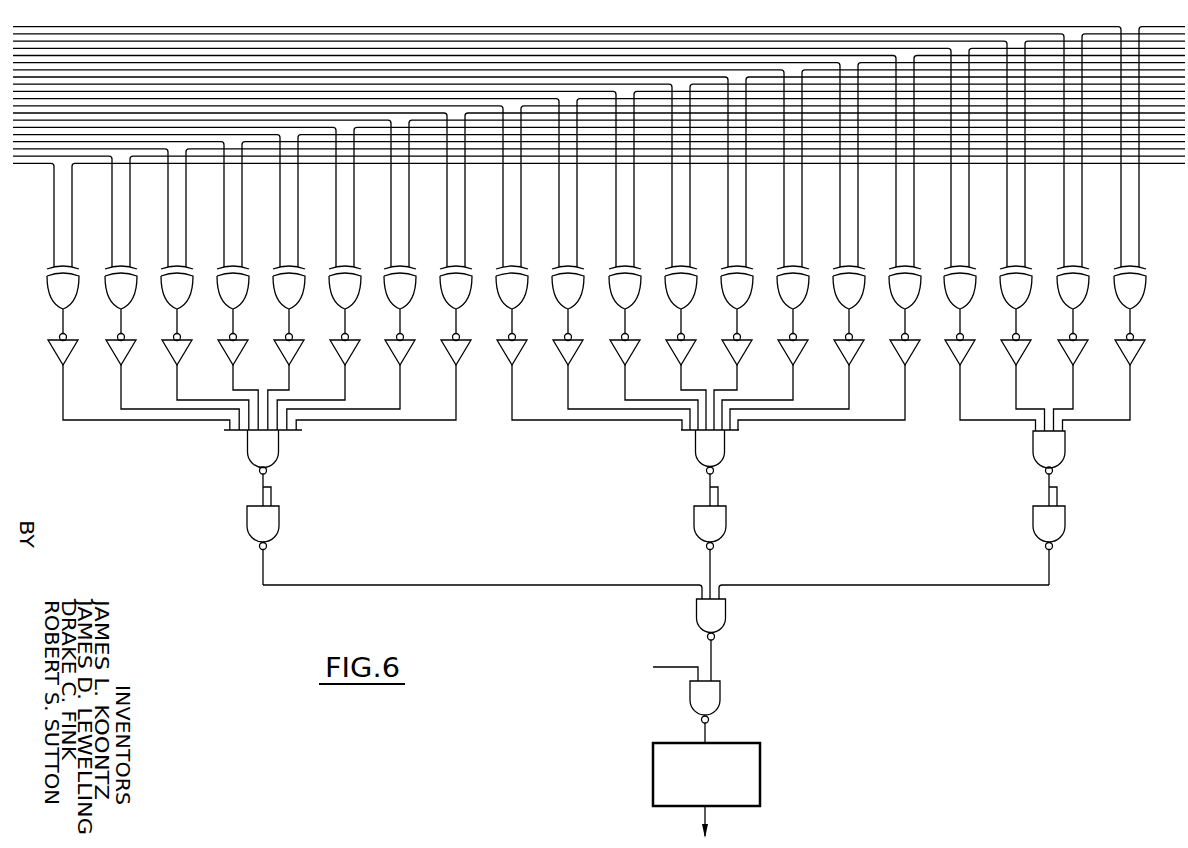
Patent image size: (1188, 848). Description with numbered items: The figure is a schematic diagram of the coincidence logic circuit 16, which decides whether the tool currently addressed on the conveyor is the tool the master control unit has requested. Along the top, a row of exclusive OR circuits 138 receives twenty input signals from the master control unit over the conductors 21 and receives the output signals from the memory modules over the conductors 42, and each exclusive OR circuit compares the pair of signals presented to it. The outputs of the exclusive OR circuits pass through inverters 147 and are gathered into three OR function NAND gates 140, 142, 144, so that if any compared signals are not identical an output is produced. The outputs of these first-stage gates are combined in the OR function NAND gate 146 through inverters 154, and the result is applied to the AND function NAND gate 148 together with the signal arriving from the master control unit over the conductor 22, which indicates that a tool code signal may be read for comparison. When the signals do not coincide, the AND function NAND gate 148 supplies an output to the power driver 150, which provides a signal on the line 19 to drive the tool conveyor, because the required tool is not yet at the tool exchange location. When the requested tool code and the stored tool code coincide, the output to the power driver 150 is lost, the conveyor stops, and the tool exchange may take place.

The coincidence logic circuit 16 is at (918, 652).
The line 19 is at (706, 812).
The conductors 21 is at (38, 167).
The conductor 22 is at (685, 665).
The conductors 42 is at (1163, 166).
The exclusive OR circuits 138 is at (50, 292).
The OR function NAND gate 140 is at (278, 452).
The OR function NAND gate 142 is at (696, 455).
The OR function NAND gate 144 is at (1033, 450).
The OR function NAND gate 146 is at (726, 622).
The inverters 147 is at (303, 350).
The AND function NAND gate 148 is at (720, 700).
The power driver 150 is at (760, 795).
The inverters 154 is at (726, 523).